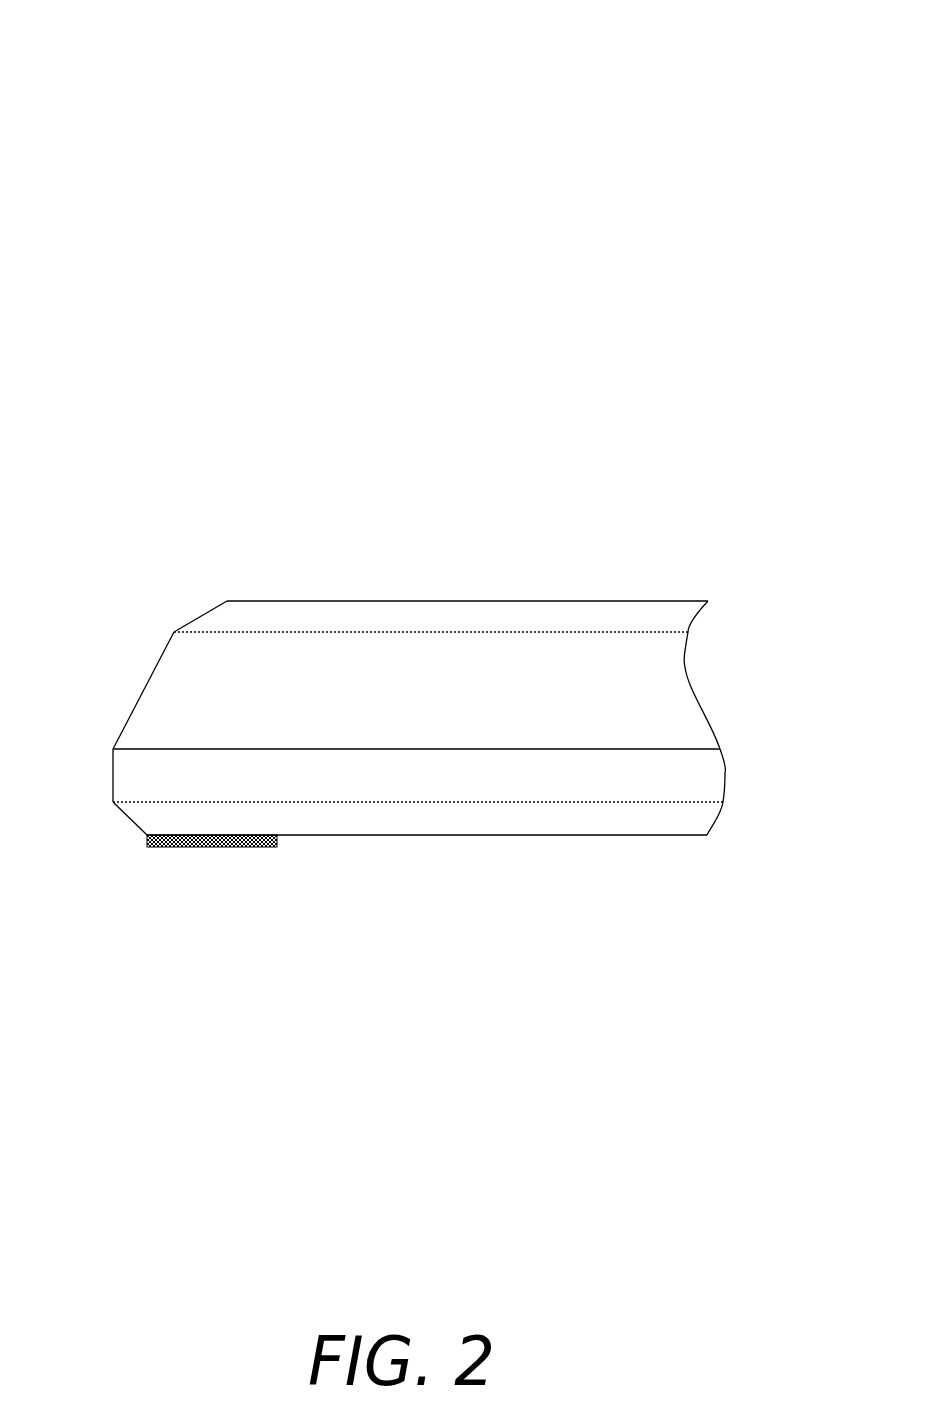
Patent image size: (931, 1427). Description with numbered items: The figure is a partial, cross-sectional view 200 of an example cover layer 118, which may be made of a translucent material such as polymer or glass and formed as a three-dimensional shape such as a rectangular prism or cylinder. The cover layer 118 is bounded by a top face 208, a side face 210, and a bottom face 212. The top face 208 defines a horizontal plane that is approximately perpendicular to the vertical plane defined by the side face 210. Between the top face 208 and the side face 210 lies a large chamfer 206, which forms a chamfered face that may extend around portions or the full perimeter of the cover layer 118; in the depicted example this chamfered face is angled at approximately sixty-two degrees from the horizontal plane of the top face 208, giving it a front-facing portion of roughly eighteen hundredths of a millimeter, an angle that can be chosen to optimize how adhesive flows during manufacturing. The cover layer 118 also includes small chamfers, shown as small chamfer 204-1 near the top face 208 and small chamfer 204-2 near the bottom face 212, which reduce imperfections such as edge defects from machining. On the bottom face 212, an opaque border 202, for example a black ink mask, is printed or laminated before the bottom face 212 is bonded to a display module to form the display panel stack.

The partial, cross-sectional view 200 is at (733, 50).
The cover layer 118 is at (295, 675).
The top face 208 is at (427, 601).
The small chamfer 204-1 is at (202, 616).
The large chamfer 206 is at (148, 680).
The side face 210 is at (113, 777).
The small chamfer 204-2 is at (131, 820).
The opaque border 202 is at (208, 847).
The bottom face 212 is at (355, 835).